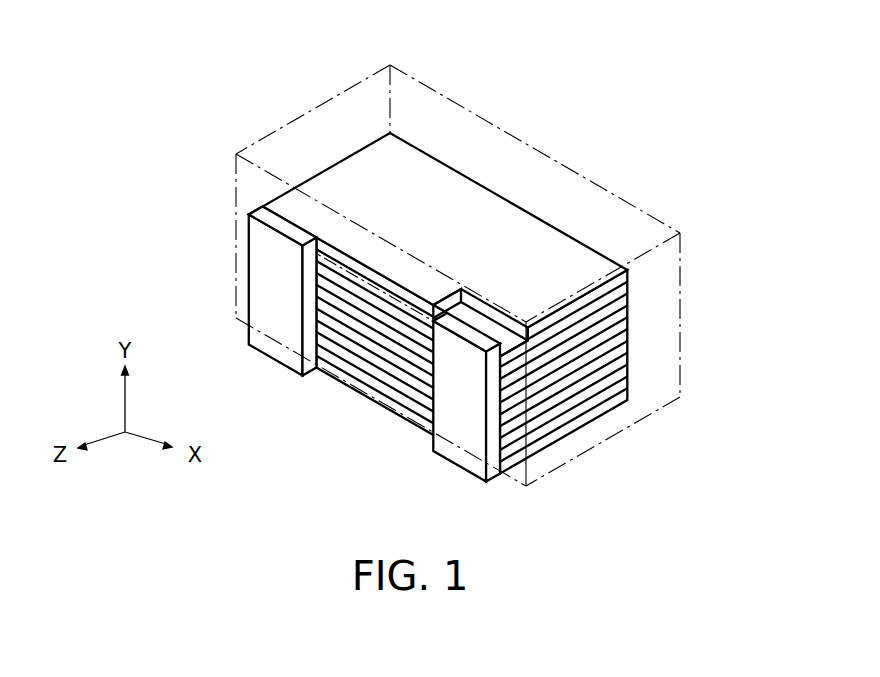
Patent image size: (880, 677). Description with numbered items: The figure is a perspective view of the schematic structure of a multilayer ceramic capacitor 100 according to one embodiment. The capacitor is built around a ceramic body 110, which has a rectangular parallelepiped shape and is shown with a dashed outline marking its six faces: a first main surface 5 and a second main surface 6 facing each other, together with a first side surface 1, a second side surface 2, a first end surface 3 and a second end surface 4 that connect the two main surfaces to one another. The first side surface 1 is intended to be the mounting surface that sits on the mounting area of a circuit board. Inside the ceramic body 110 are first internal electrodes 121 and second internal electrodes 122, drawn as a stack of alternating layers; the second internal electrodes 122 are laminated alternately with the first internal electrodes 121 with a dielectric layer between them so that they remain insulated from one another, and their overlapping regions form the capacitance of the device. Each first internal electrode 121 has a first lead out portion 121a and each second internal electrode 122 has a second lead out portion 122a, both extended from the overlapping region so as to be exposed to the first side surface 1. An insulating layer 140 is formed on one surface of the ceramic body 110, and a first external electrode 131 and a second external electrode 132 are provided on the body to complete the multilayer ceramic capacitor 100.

The multilayer ceramic capacitor 100 is at (429, 290).
The ceramic body 110 is at (470, 268).
The first internal electrode 121 is at (432, 178).
The second internal electrode 122 is at (632, 284).
The first lead out portion 121a is at (276, 209).
The second lead out portion 122a is at (497, 337).
The first external electrode 131 is at (278, 320).
The second external electrode 132 is at (462, 428).
The insulating layer 140 is at (355, 402).
The first side surface 1 is at (350, 357).
The second side surface 2 is at (560, 156).
The first end surface 3 is at (305, 112).
The second end surface 4 is at (657, 318).
The first main surface 5 is at (358, 114).
The second main surface 6 is at (606, 447).